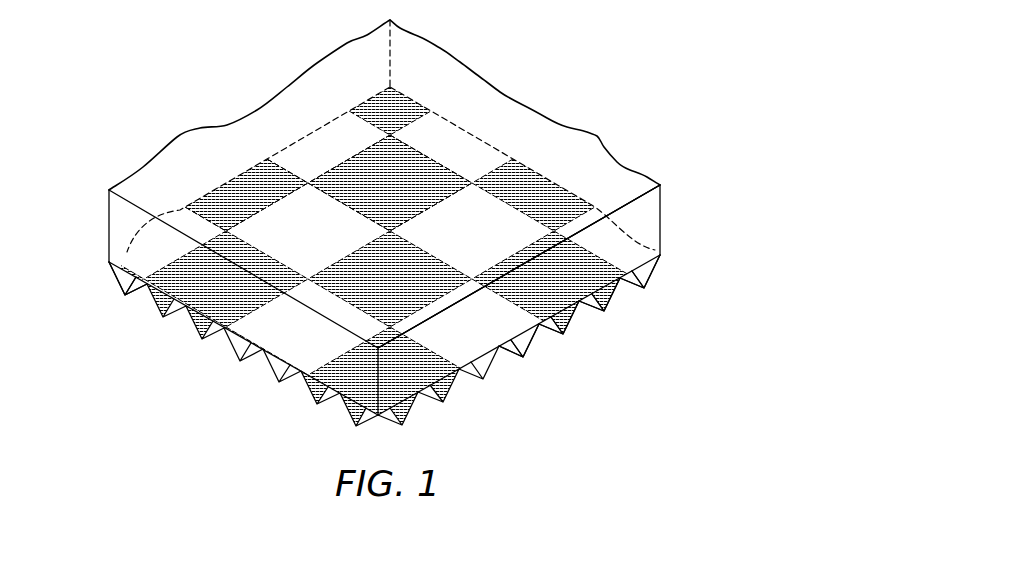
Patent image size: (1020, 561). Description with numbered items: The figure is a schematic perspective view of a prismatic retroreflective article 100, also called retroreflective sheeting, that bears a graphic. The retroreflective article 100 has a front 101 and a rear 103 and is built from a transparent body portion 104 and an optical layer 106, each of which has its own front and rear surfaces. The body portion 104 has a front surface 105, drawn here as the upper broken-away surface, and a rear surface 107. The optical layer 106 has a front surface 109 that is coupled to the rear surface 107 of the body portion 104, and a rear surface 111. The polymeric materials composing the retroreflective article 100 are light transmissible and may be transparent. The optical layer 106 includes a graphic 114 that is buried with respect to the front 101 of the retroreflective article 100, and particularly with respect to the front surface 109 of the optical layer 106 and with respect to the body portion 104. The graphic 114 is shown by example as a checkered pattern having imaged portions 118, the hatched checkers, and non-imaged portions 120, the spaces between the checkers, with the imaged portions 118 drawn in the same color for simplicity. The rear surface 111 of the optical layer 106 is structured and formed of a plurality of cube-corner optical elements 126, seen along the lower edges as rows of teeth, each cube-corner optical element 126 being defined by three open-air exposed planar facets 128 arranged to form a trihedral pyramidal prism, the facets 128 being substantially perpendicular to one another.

The retroreflective article 100 is at (600, 68).
The front 101 is at (132, 155).
The rear 103 is at (170, 336).
The body portion 104 is at (666, 221).
The front surface 105 is at (600, 152).
The optical layer 106 is at (660, 318).
The rear surface 107 is at (647, 262).
The front surface 109 is at (128, 268).
The rear surface 111 is at (128, 282).
The graphic 114 is at (248, 182).
The imaged portions 118 is at (403, 167).
The non-imaged portions 120 is at (470, 333).
The cube-corner optical elements 126 is at (636, 298).
The planar facets 128 is at (565, 318).